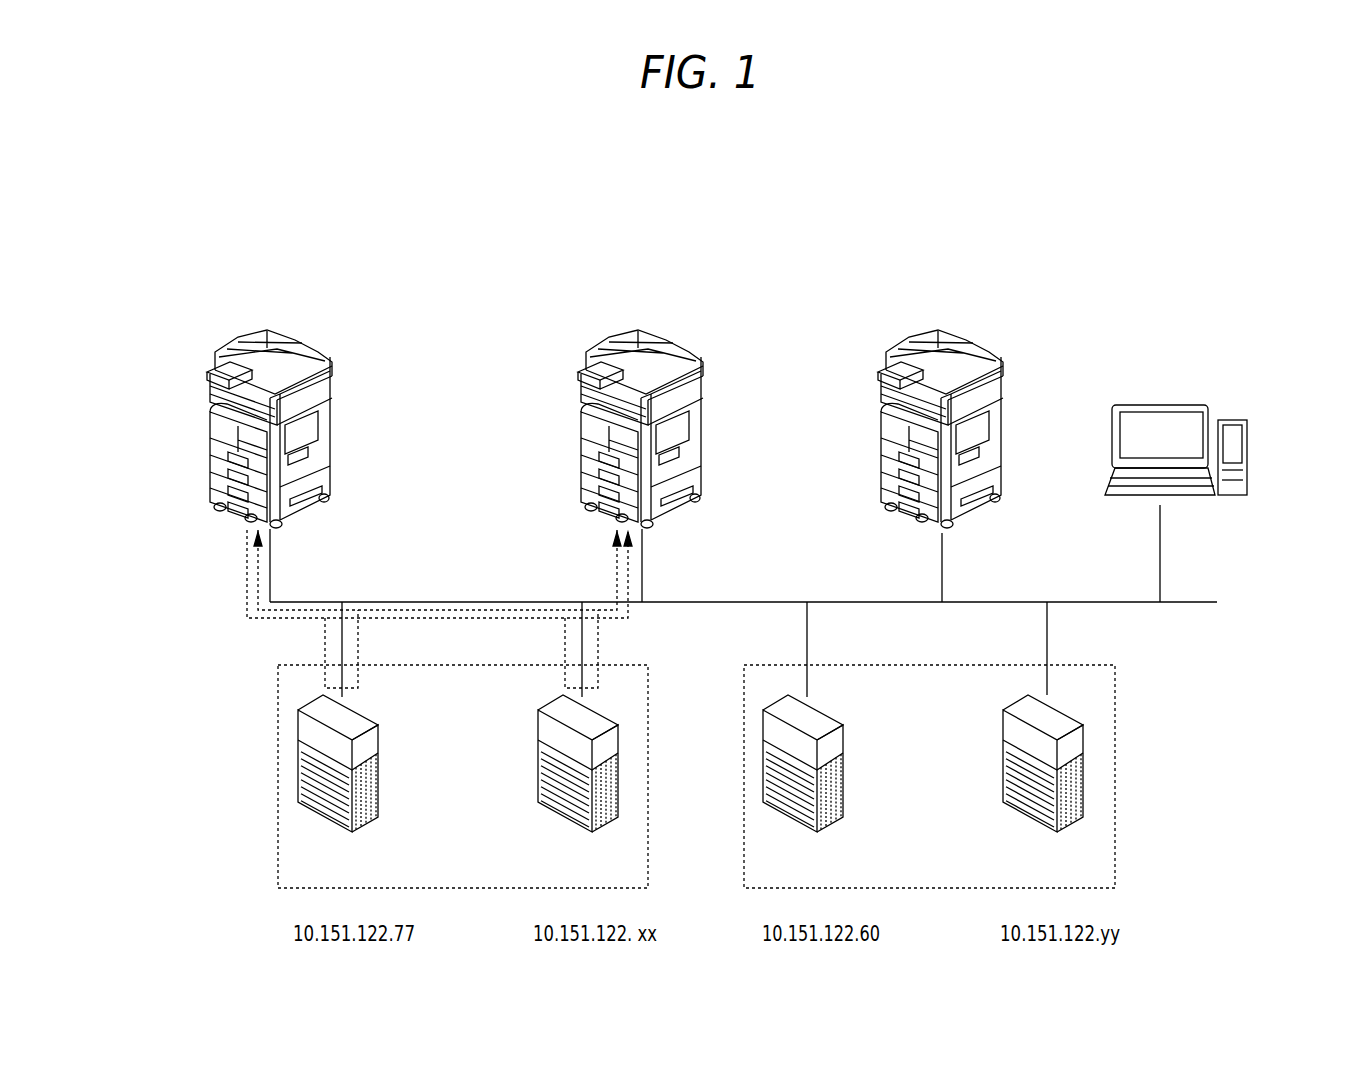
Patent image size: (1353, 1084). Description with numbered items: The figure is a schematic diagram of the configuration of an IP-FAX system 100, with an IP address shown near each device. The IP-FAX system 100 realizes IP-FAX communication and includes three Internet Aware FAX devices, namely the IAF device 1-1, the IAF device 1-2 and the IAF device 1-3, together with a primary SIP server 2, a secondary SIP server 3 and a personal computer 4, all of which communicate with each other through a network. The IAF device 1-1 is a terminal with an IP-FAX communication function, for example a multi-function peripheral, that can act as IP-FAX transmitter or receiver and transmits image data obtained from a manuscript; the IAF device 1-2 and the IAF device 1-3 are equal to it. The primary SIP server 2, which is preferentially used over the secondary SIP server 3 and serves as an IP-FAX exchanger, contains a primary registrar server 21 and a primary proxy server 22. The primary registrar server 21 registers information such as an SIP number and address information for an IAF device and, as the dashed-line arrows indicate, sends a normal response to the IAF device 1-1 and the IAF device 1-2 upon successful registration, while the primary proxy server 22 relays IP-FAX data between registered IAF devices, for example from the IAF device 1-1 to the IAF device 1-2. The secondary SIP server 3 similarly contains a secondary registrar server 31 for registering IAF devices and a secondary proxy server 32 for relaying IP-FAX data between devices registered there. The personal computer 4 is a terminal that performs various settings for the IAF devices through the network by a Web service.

The IP-FAX system 100 is at (362, 280).
The IAF device 1-1 is at (233, 342).
The IAF device 1-2 is at (675, 340).
The IAF device 1-3 is at (975, 340).
The primary SIP server 2 is at (278, 760).
The secondary SIP server 3 is at (1115, 760).
The personal computer 4 is at (1165, 402).
The primary registrar server 21 is at (378, 778).
The primary proxy server 22 is at (538, 728).
The secondary registrar server 31 is at (843, 778).
The secondary proxy server 32 is at (1003, 728).